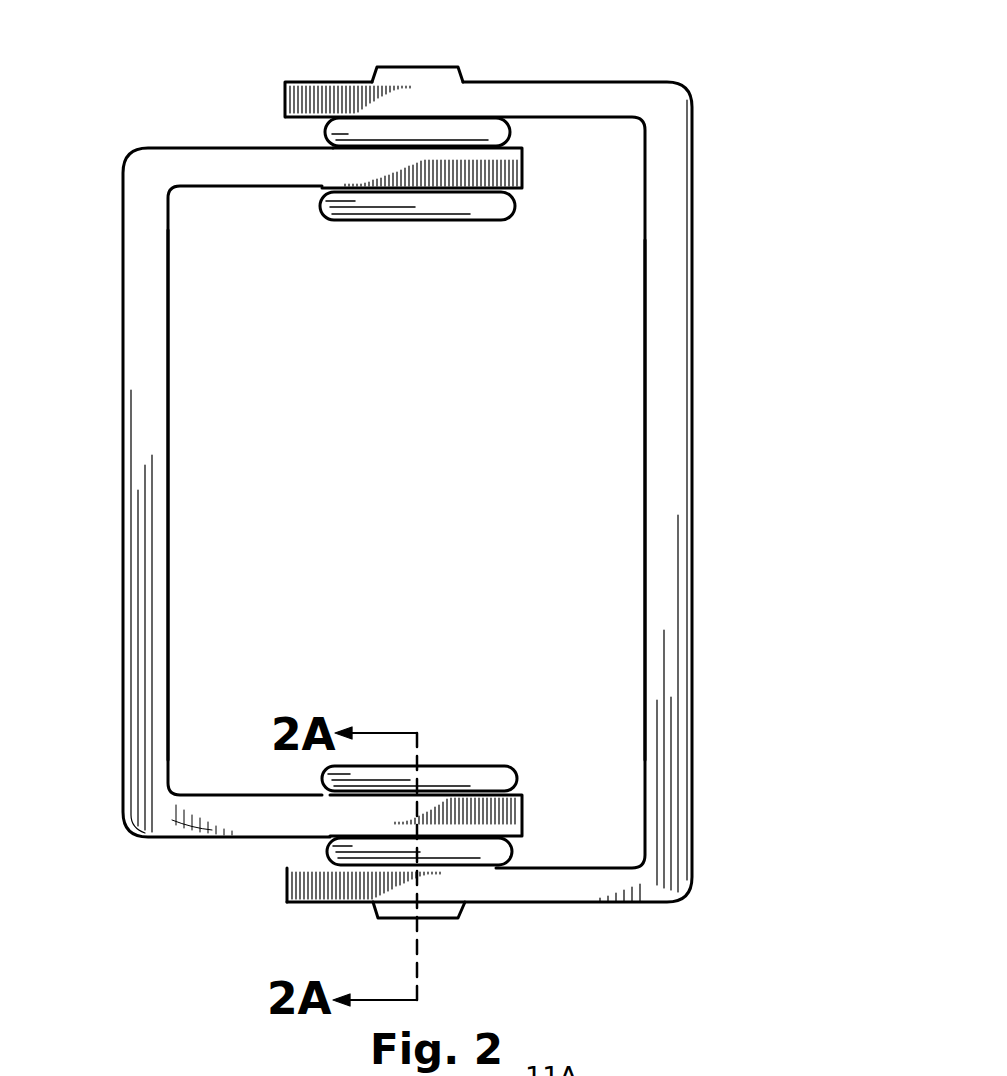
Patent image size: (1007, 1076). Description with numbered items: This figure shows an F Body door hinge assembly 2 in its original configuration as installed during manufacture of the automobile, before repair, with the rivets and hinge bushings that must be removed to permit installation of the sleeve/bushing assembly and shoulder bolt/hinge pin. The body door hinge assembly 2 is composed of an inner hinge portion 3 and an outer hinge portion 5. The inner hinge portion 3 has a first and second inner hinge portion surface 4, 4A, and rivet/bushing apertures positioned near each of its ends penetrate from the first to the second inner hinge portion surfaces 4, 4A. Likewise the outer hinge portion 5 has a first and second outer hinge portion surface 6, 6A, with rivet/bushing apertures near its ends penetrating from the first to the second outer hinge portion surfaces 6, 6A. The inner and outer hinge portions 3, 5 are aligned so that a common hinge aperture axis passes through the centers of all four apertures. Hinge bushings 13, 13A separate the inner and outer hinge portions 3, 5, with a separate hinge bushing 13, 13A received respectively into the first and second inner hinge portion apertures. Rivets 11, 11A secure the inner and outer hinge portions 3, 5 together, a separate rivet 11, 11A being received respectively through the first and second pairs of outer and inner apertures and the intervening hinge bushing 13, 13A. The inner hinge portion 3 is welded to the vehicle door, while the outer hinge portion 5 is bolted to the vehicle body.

The body door hinge assembly 2 is at (725, 165).
The inner hinge portion 3 is at (188, 492).
The first inner hinge portion surface 4 is at (123, 652).
The second inner hinge portion surface 4A is at (168, 523).
The outer hinge portion 5 is at (546, 492).
The first outer hinge portion surface 6 is at (692, 763).
The second outer hinge portion surface 6A is at (643, 557).
The rivet 11 is at (370, 82).
The rivet 11A is at (502, 765).
The hinge bushing 13 is at (330, 128).
The hinge bushing 13A is at (330, 853).